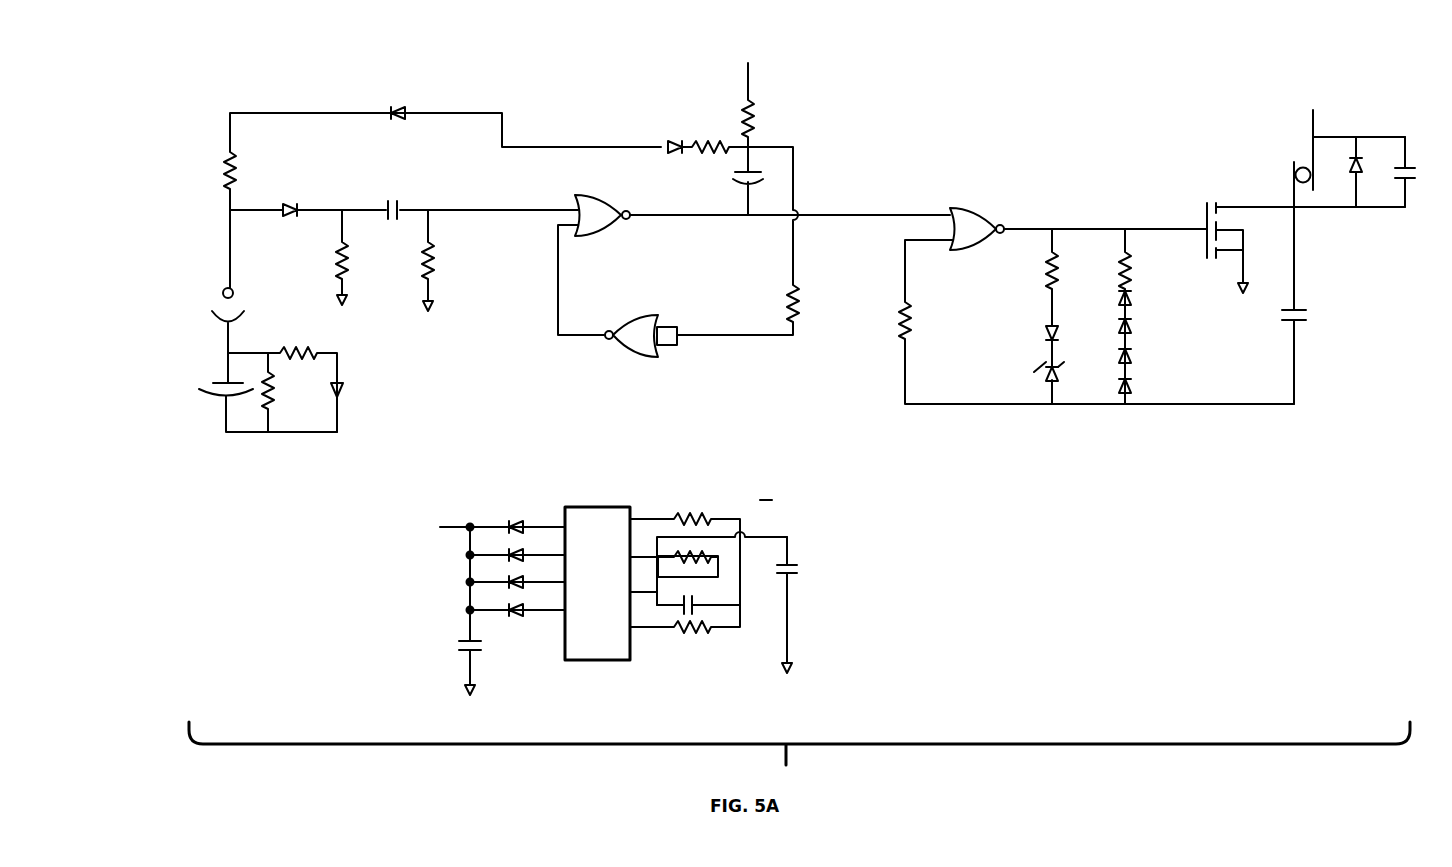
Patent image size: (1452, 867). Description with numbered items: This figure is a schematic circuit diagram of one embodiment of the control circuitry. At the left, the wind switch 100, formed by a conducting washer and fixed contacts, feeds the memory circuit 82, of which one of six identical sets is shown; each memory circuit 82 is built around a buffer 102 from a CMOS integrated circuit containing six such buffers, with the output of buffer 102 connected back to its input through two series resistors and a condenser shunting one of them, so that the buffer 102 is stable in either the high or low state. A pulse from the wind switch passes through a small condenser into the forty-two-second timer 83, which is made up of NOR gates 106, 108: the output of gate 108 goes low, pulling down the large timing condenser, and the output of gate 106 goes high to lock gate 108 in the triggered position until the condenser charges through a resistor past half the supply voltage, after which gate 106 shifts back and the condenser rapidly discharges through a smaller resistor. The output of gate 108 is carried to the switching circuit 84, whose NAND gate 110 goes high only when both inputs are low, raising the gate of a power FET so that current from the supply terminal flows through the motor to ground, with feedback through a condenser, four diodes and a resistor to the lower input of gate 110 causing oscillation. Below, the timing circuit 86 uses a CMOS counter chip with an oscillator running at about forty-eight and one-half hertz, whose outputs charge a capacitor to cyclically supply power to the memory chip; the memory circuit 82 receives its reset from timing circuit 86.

The memory circuit 82 is at (273, 448).
The charging network 83 is at (543, 94).
The switching circuit 84 is at (1023, 130).
The timing circuit 86 is at (730, 467).
The wind switch 100 is at (203, 307).
The buffer 102 is at (325, 379).
The NOR gate 106 is at (645, 315).
The NOR gate 108 is at (754, 248).
The NAND gate 110 is at (978, 206).